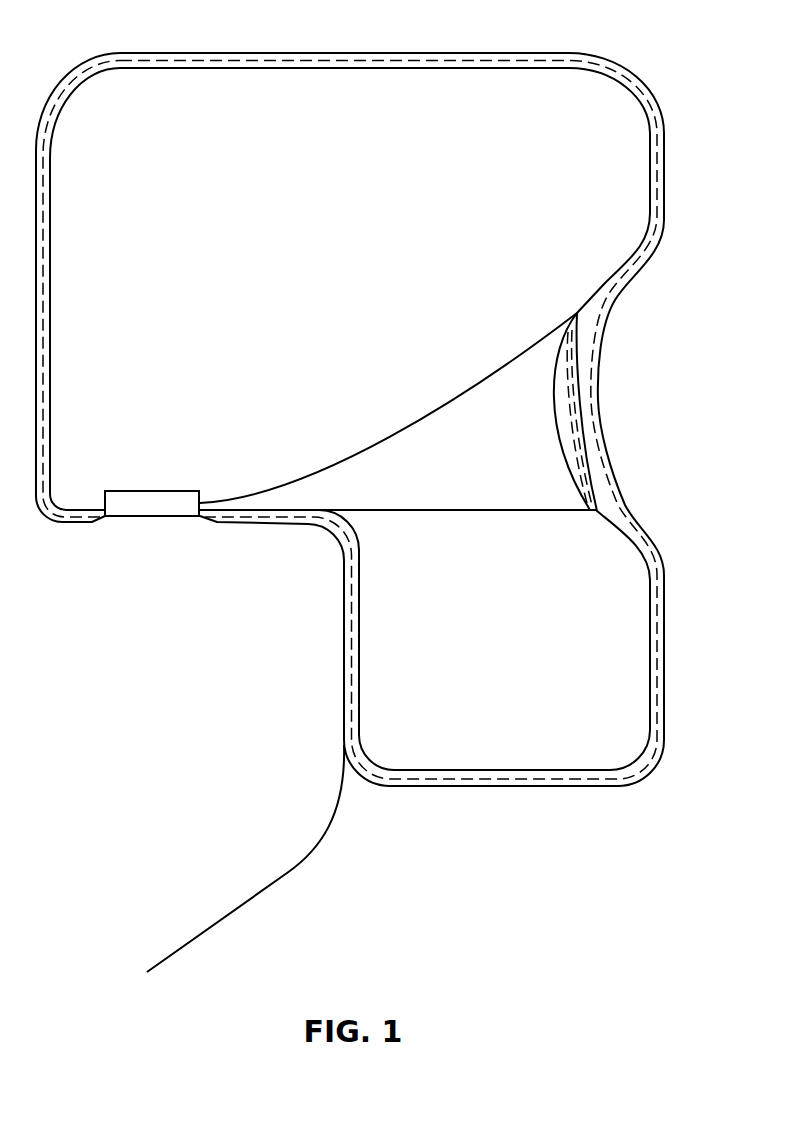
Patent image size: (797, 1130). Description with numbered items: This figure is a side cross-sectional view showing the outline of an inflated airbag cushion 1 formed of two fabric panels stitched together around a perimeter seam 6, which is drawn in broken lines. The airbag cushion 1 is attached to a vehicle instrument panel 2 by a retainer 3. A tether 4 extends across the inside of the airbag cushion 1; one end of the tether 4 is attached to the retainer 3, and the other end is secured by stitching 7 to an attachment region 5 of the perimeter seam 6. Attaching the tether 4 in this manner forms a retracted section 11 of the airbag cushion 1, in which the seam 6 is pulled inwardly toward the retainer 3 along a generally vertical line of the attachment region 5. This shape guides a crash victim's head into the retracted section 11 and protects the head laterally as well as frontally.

The airbag cushion 1 is at (305, 90).
The vehicle instrument panel 2 is at (181, 728).
The retainer 3 is at (150, 505).
The tether 4 is at (437, 499).
The attachment region 5 is at (553, 392).
The perimeter seam 6 is at (382, 57).
The stitching 7 is at (573, 445).
The retracted section 11 is at (609, 389).